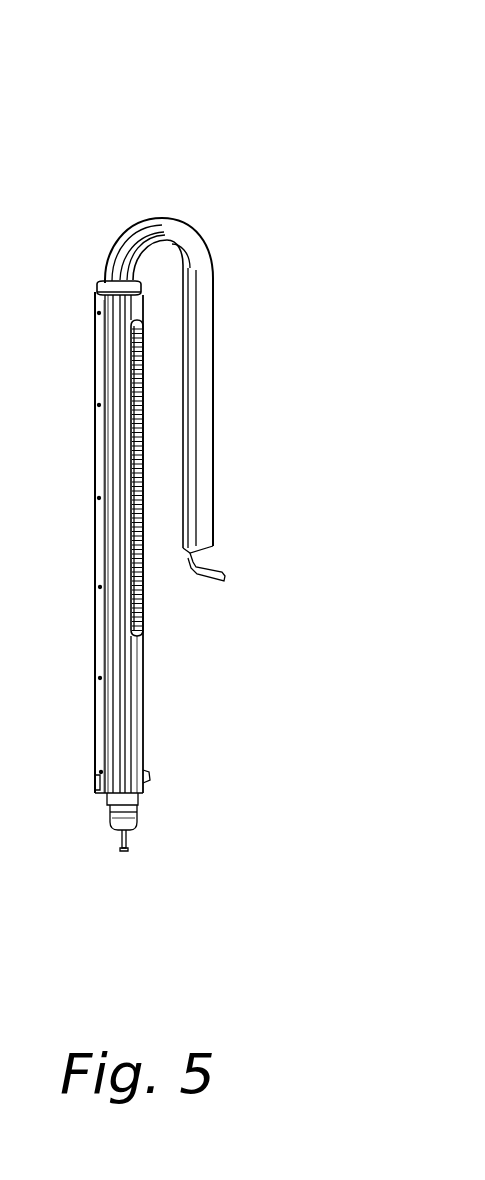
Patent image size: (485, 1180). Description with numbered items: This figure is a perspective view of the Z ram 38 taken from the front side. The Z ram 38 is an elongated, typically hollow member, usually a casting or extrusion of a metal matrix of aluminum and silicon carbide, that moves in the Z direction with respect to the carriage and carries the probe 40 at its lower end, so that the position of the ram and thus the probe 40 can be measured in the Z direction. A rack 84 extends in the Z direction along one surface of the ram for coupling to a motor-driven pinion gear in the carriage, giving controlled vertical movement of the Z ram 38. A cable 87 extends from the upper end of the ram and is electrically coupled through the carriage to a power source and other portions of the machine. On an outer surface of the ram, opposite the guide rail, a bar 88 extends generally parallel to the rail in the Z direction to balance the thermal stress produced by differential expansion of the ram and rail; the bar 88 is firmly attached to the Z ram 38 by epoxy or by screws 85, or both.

The Z ram 38 is at (175, 148).
The cable 87 is at (216, 285).
The bar 88 is at (97, 379).
The rack 84 is at (141, 578).
The screws 85 is at (101, 587).
The probe 40 is at (128, 848).